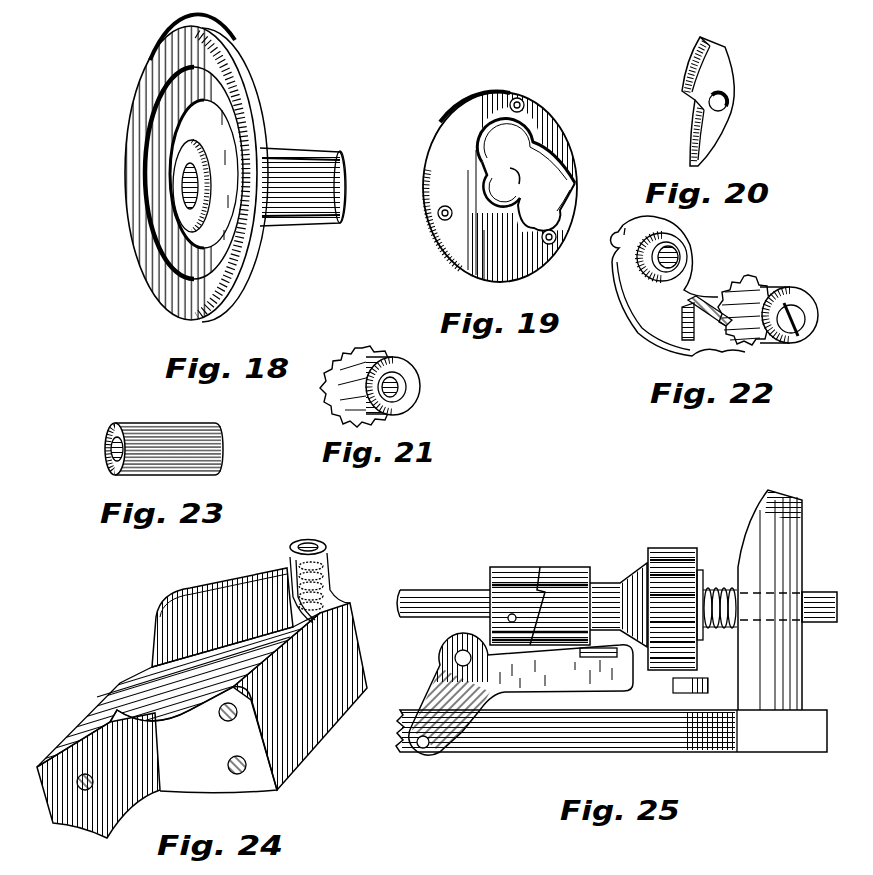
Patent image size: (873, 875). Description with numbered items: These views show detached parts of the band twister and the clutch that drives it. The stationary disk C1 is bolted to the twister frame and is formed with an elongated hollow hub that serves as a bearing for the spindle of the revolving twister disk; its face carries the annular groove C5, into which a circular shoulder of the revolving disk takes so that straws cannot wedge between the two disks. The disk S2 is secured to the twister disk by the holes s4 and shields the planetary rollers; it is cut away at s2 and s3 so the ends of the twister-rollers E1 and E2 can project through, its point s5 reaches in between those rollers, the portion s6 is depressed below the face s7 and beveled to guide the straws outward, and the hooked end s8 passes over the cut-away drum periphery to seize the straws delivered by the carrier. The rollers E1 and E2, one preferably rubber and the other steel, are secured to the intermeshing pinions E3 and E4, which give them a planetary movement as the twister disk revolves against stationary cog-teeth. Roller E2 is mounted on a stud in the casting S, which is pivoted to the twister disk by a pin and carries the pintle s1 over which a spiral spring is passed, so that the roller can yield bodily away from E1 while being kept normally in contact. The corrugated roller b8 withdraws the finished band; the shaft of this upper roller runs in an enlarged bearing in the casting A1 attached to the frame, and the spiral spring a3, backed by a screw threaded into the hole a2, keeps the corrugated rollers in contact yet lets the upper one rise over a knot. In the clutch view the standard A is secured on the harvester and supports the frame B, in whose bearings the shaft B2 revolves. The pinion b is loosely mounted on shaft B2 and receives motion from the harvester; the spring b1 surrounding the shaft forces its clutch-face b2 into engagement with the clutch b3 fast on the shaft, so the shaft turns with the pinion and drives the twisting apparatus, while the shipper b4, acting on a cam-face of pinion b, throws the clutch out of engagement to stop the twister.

In FIG. 18, the annular groove C5 is at (211, 76).
In FIG. 18, the stationary disk C1 is at (196, 168).
In FIG. 19, the disk S2 is at (511, 185).
In FIG. 19, the cut-away portion s2 is at (526, 151).
In FIG. 19, the cut-away portion s3 is at (546, 203).
In FIG. 20, the cut-away portion s3 is at (724, 77).
In FIG. 19, the holes s4 is at (522, 100).
In FIG. 19, the point s5 is at (518, 174).
In FIG. 19, the depressed portion s6 is at (501, 184).
In FIG. 19, the face s7 is at (510, 272).
In FIG. 19, the hooked end s8 is at (577, 185).
In FIG. 21, the pinion E3 is at (373, 358).
In FIG. 21, the twister-roller E1 is at (414, 382).
In FIG. 22, the casting S is at (689, 258).
In FIG. 22, the pintle s1 is at (690, 320).
In FIG. 22, the pinion E4 is at (768, 289).
In FIG. 22, the twister-roller E2 is at (805, 308).
In FIG. 23, the corrugated roller b8 is at (147, 428).
In FIG. 24, the casting A1 is at (202, 695).
In FIG. 24, the hole a2 is at (314, 544).
In FIG. 24, the spiral spring a3 is at (322, 580).
In FIG. 25, the standard A is at (611, 731).
In FIG. 25, the frame B is at (780, 497).
In FIG. 25, the shaft B2 is at (433, 598).
In FIG. 25, the clutch b3 is at (508, 575).
In FIG. 25, the clutch-face b2 is at (565, 570).
In FIG. 25, the pinion b is at (673, 563).
In FIG. 25, the spring b1 is at (720, 590).
In FIG. 25, the shipper b4 is at (558, 692).